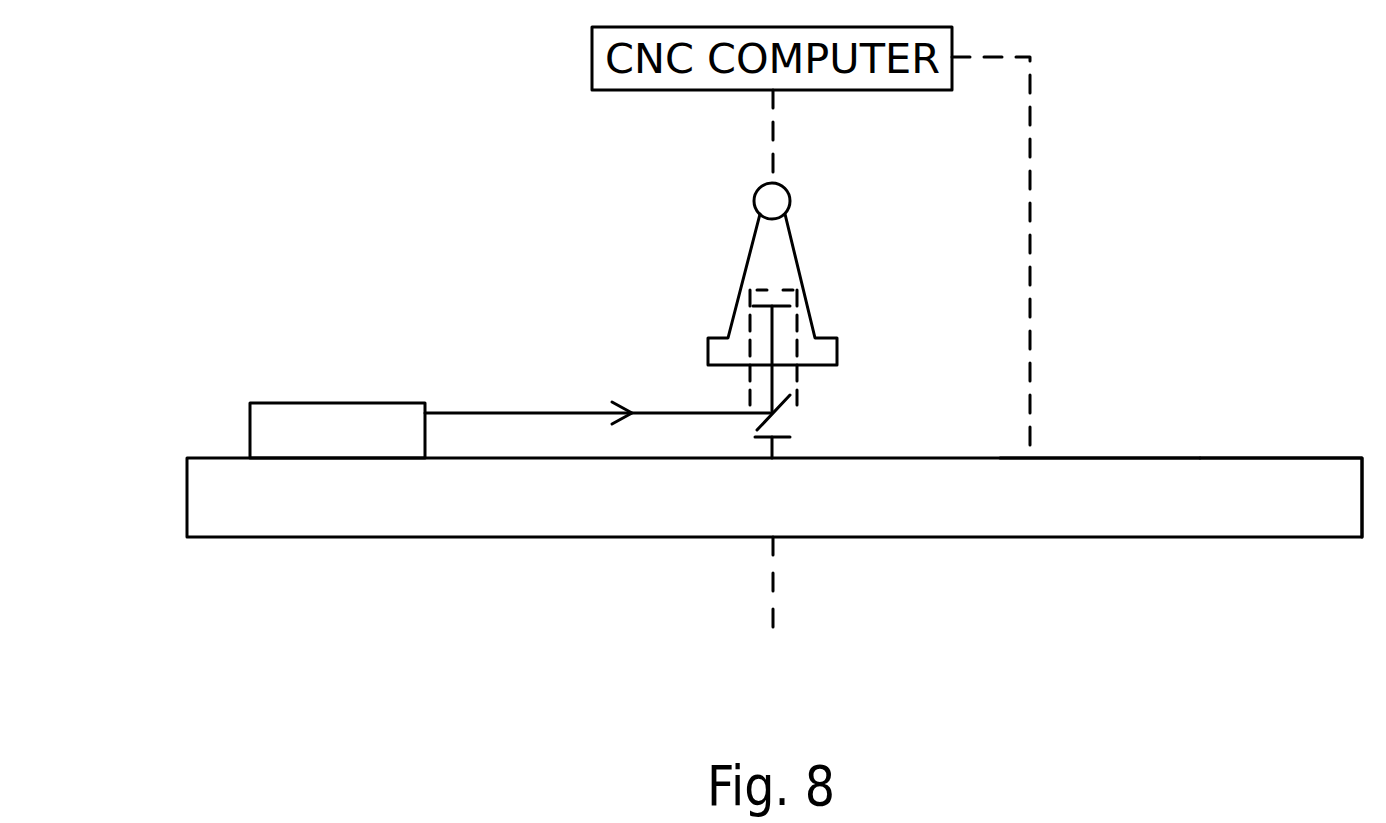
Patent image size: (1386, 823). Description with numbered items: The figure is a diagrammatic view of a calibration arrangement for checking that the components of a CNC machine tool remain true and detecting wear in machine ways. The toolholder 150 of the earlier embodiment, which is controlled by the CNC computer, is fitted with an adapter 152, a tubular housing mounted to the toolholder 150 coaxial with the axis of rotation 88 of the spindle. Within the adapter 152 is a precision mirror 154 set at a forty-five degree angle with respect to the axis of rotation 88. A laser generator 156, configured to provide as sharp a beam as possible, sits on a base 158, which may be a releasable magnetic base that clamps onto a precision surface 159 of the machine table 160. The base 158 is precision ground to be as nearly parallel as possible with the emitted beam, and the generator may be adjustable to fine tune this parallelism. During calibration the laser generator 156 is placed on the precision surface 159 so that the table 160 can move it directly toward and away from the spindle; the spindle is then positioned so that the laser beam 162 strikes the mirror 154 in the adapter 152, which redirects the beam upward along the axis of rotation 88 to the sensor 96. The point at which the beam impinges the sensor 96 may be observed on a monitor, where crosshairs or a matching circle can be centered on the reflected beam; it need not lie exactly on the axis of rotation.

The axis of rotation 88 is at (773, 558).
The sensor 96 is at (765, 303).
The toolholder 150 is at (803, 292).
The adapter 152 is at (800, 385).
The precision mirror 154 is at (768, 418).
The laser generator 156 is at (332, 402).
The base 158 is at (285, 459).
The precision surface 159 is at (1105, 458).
The machine table 160 is at (1272, 458).
The laser beam 162 is at (545, 412).